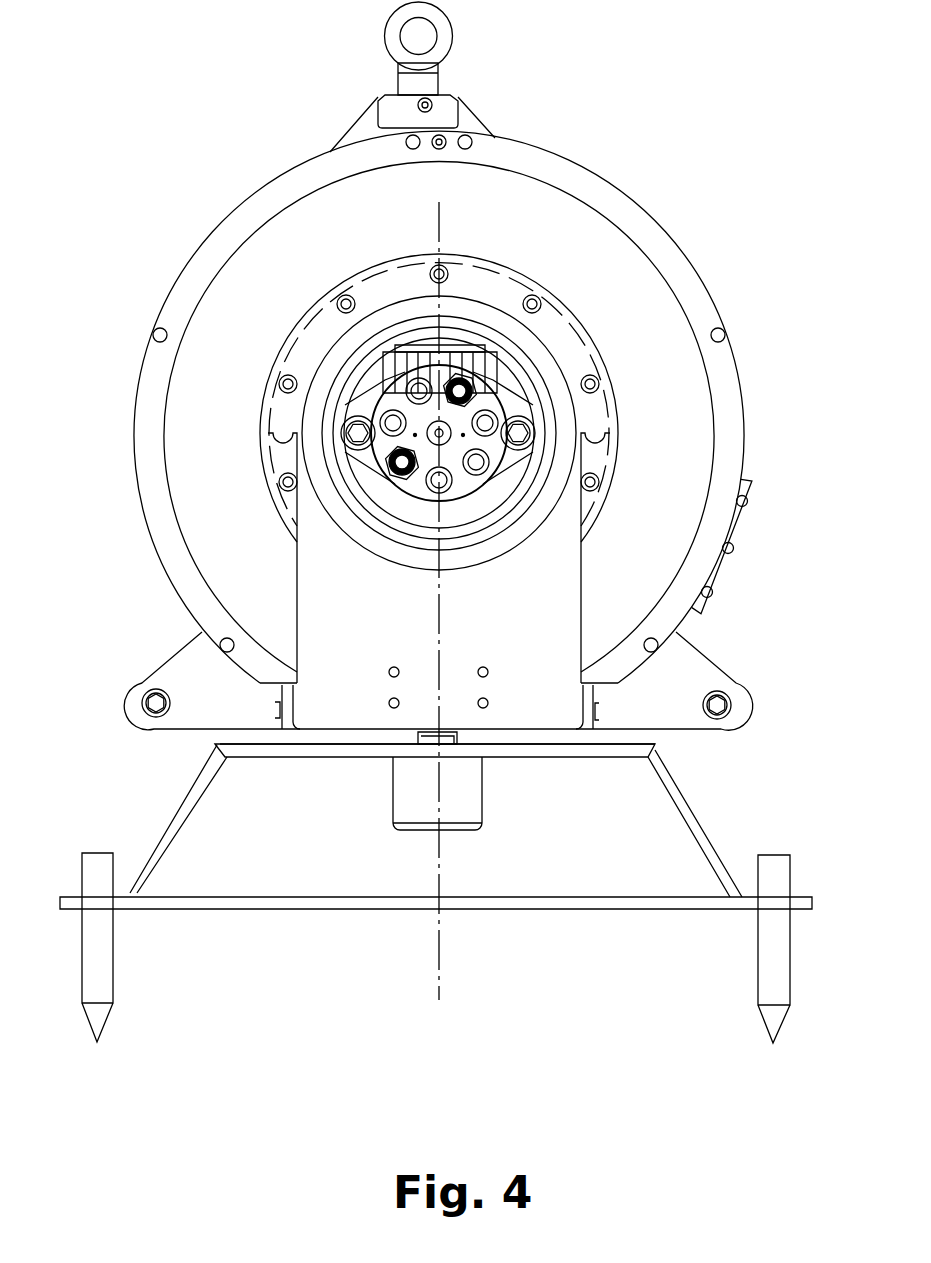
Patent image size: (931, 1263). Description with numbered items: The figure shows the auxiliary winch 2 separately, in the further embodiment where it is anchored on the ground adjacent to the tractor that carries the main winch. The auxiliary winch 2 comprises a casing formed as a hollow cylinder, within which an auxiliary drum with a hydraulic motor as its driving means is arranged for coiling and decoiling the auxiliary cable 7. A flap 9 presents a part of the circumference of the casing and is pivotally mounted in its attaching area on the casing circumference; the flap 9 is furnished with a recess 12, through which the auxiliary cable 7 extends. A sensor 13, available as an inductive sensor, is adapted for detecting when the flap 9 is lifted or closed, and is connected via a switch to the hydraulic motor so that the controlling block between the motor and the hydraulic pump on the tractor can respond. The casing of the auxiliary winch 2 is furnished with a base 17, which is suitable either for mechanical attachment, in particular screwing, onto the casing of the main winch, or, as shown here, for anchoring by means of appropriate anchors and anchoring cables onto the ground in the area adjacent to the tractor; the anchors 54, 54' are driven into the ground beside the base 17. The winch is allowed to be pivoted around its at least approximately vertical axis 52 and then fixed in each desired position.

The auxiliary winch 2 is at (688, 241).
The auxiliary cable 7 is at (722, 597).
The flap 9 is at (752, 491).
The recess 12 is at (717, 590).
The sensor 13 is at (449, 111).
The base 17 is at (731, 858).
The vertical axis 52 is at (441, 219).
The ground stake 54 is at (127, 947).
The ground stake 54' is at (740, 949).